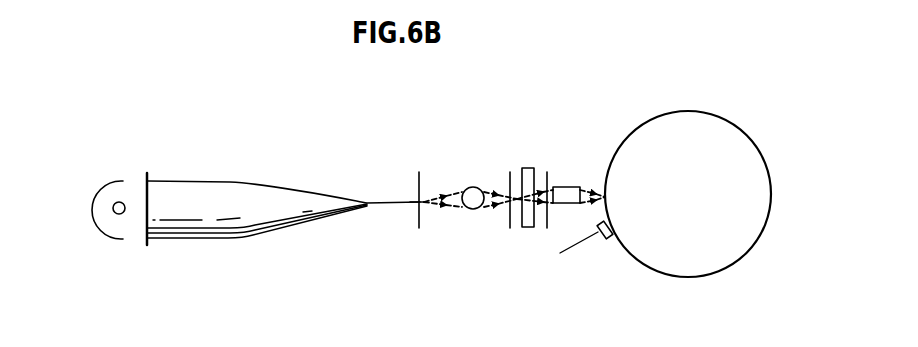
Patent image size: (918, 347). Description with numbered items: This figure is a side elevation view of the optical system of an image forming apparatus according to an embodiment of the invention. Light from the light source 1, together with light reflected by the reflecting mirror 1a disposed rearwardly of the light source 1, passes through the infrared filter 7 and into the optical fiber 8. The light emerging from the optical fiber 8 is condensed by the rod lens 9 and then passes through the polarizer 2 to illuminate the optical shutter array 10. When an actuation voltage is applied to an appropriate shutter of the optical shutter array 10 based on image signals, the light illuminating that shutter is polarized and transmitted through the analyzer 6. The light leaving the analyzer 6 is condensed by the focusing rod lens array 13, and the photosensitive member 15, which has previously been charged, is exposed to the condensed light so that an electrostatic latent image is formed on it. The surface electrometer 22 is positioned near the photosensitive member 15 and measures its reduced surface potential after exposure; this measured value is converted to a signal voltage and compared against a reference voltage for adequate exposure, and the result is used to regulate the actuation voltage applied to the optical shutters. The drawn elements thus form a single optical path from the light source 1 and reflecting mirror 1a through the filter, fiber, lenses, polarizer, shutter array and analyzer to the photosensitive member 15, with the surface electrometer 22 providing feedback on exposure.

The reflecting mirror 1a is at (112, 178).
The light source 1 is at (125, 212).
The infrared filter 7 is at (148, 180).
The optical fiber 8 is at (288, 190).
The rod lens 9 is at (470, 211).
The polarizer 2 is at (510, 225).
The optical shutter array 10 is at (522, 228).
The analyzer 6 is at (544, 228).
The focusing rod lens array 13 is at (568, 187).
The photosensitive member 15 is at (763, 153).
The surface electrometer 22 is at (608, 238).